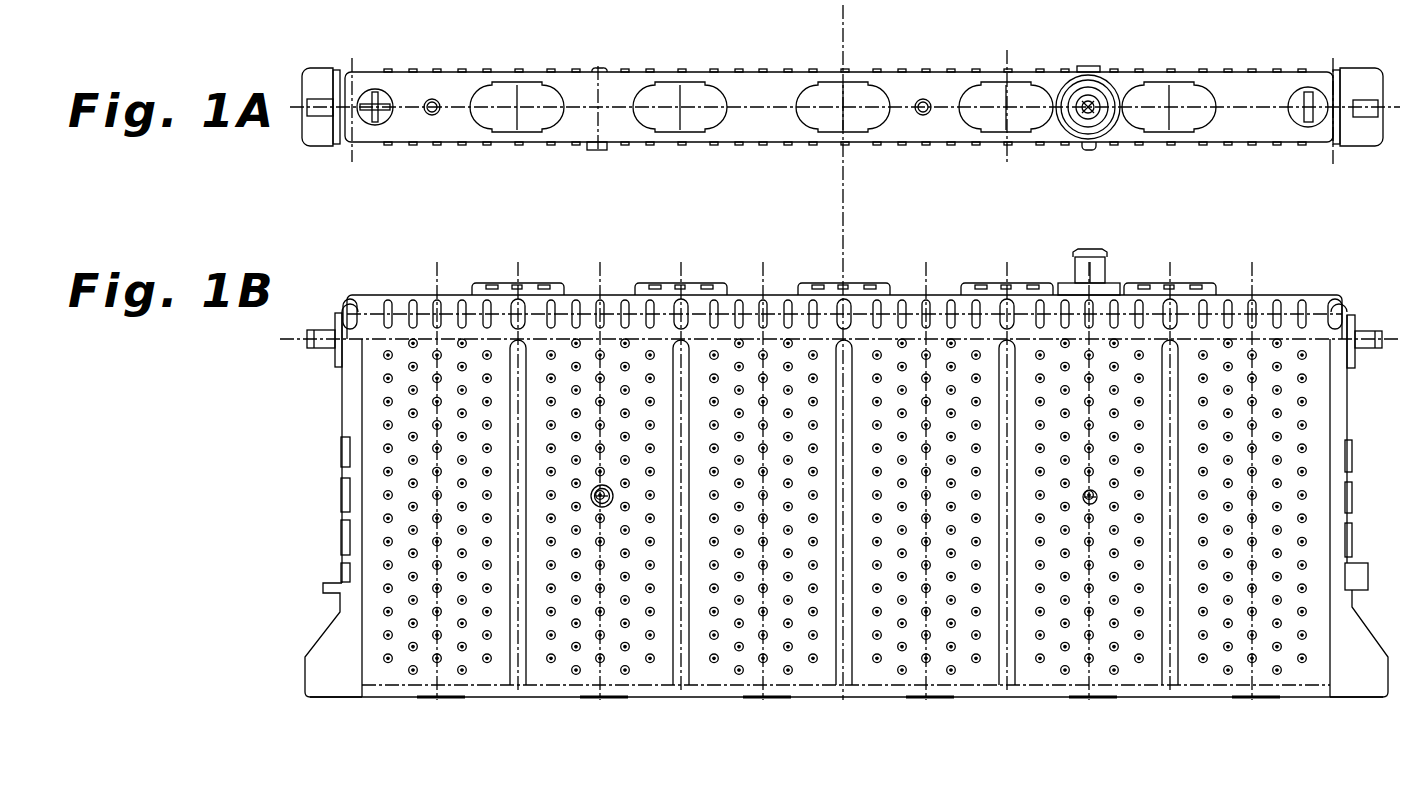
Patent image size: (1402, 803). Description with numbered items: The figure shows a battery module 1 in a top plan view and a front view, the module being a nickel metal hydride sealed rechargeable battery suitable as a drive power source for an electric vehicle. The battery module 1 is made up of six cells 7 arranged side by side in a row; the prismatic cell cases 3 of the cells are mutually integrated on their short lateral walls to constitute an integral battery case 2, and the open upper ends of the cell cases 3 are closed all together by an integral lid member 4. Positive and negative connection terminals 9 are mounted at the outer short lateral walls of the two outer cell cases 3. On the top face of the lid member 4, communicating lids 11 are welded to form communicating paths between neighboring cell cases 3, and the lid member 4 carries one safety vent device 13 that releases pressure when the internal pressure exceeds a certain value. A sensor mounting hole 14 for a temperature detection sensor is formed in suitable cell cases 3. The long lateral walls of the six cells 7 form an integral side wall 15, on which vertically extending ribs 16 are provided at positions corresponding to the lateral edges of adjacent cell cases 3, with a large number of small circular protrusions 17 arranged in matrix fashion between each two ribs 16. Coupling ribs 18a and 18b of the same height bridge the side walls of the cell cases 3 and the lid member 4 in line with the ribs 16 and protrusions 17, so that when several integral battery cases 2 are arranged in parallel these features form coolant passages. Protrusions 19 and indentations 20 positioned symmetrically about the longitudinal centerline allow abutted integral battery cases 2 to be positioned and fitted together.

In FIG. 1A, the battery module 1 is at (298, 70).
In FIG. 1B, the battery module 1 is at (312, 402).
In FIG. 1B, the integral battery case 2 is at (330, 538).
In FIG. 1B, the cell case 3 is at (476, 699).
In FIG. 1A, the lid member 4 is at (585, 86).
In FIG. 1B, the lid member 4 is at (393, 297).
In FIG. 1B, the cell 7 is at (420, 699).
In FIG. 1A, the connection terminal 9 is at (318, 99).
In FIG. 1B, the connection terminal 9 is at (318, 330).
In FIG. 1A, the communicating lid 11 is at (498, 96).
In FIG. 1B, the communicating lid 11 is at (500, 283).
In FIG. 1A, the safety vent device 13 is at (1098, 100).
In FIG. 1B, the safety vent device 13 is at (1096, 280).
In FIG. 1A, the sensor mounting hole 14 is at (428, 115).
In FIG. 1B, the side wall 15 is at (545, 665).
In FIG. 1A, the rib 16 is at (518, 71).
In FIG. 1B, the rib 16 is at (352, 462).
In FIG. 1A, the circular protrusion 17 is at (484, 70).
In FIG. 1B, the circular protrusion 17 is at (462, 676).
In FIG. 1B, the coupling rib 18a is at (521, 300).
In FIG. 1B, the coupling rib 18b is at (485, 300).
In FIG. 1A, the protrusion 19 is at (600, 69).
In FIG. 1B, the protrusion 19 is at (1097, 497).
In FIG. 1A, the indentation 20 is at (1090, 66).
In FIG. 1B, the indentation 20 is at (591, 499).